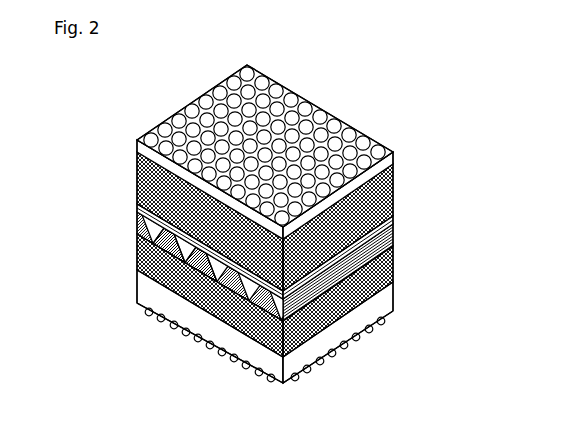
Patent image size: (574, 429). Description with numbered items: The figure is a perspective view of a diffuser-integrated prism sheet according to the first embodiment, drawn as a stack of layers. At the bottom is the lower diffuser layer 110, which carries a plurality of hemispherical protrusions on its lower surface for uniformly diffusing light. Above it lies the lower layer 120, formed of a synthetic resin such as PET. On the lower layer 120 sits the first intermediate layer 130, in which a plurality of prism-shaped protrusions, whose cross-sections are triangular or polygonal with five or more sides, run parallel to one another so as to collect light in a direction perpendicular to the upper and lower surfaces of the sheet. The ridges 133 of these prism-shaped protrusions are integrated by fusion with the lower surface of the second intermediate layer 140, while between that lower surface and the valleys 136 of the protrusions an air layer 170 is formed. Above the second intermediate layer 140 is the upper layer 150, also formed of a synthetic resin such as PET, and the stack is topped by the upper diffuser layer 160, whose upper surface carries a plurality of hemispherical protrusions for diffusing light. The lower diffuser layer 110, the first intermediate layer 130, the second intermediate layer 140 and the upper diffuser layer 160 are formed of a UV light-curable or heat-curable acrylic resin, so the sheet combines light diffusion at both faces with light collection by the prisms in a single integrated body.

The lower diffuser layer 110 is at (391, 307).
The lower layer 120 is at (394, 276).
The first intermediate layer 130 is at (229, 297).
The ridges 133 is at (230, 325).
The valleys 136 is at (186, 298).
The second intermediate layer 140 is at (138, 197).
The upper layer 150 is at (138, 163).
The upper diffuser layer 160 is at (138, 146).
The air layer 170 is at (297, 352).